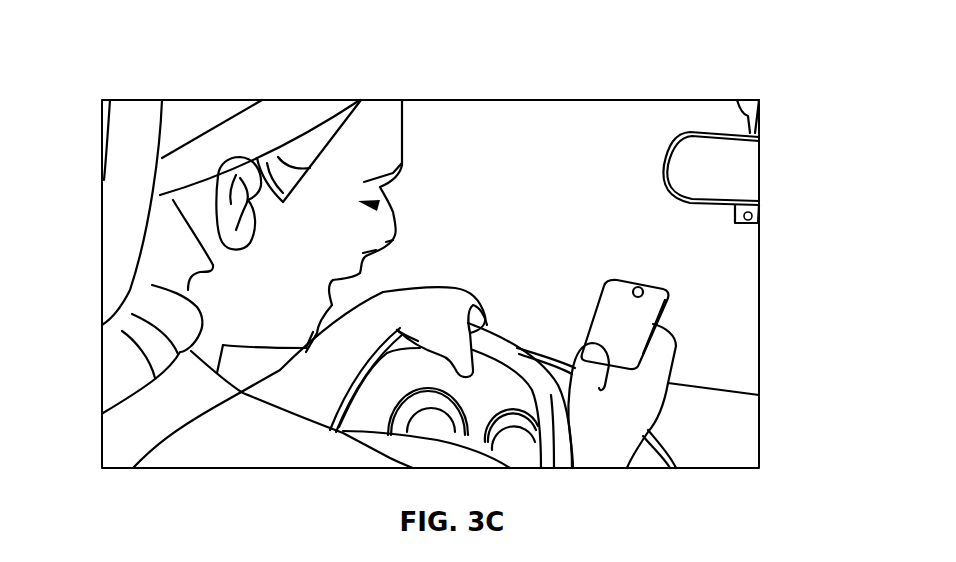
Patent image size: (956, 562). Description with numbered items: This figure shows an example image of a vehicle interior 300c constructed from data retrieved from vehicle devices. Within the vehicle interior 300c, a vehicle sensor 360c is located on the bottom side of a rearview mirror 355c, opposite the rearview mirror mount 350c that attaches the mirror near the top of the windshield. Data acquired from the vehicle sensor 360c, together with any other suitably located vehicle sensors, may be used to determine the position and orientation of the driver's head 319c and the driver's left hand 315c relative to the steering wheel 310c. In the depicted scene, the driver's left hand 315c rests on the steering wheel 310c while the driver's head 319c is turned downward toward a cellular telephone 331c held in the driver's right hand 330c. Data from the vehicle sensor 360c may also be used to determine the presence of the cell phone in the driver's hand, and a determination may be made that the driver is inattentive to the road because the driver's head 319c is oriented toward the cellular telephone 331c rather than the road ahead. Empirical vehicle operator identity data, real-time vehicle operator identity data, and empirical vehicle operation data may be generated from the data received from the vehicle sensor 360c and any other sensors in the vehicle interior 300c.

The vehicle interior 300c is at (158, 80).
The driver's head 319c is at (402, 137).
The driver's left hand 315c is at (465, 287).
The steering wheel 310c is at (500, 337).
The mobile phone 331c is at (645, 308).
The driver hand holding phone 330c is at (650, 363).
The rearview mirror mount 350c is at (747, 108).
The rearview mirror 355c is at (737, 162).
The vehicle sensor 360c is at (752, 216).